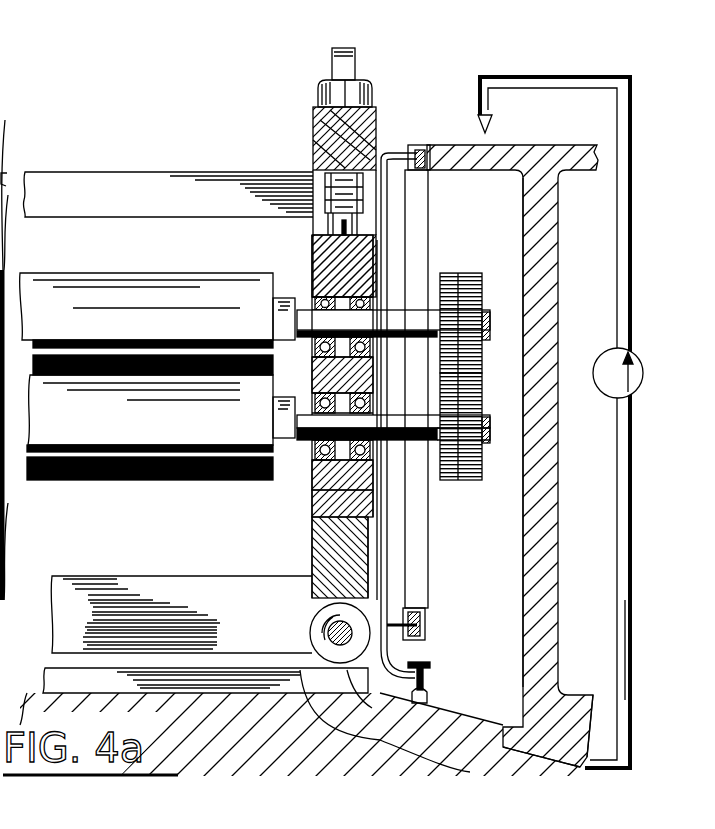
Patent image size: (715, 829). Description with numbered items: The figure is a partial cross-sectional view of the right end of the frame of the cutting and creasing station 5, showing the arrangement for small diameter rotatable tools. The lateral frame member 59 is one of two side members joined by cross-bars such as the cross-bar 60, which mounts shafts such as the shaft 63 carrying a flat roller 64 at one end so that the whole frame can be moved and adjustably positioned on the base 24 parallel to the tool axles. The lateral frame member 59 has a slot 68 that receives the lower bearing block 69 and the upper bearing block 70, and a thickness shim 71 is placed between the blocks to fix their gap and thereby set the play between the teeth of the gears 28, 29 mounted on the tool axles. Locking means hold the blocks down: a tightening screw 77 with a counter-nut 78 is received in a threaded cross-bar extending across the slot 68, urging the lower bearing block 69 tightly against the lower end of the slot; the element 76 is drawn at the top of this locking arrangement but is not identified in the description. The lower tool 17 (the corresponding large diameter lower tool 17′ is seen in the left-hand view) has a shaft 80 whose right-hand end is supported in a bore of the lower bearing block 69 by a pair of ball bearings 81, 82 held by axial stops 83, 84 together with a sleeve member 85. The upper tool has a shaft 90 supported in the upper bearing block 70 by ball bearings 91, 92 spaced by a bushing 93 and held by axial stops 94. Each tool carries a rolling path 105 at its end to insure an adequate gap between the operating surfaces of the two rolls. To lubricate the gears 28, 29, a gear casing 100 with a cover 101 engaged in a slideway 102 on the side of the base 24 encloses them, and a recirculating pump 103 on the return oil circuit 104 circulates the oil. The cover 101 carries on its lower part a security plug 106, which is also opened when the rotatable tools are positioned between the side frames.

The cutting and creasing station 5 is at (552, 64).
The lower tool 17 is at (137, 433).
The large diameter lower tool 17′ is at (5, 500).
The base 24 is at (3, 623).
The gear 28 is at (483, 457).
The gear 29 is at (483, 293).
The lateral frame member 59 is at (372, 562).
The cross-bar 60 is at (3, 597).
The shaft 63 is at (470, 770).
The flat roller 64 is at (583, 736).
The slot 68 is at (378, 515).
The lower bearing block 69 is at (385, 505).
The upper bearing block 70 is at (372, 243).
The thickness shim 71 is at (483, 400).
The cylinder 76 is at (313, 117).
The tightening screw 77 is at (313, 165).
The counter-nut 78 is at (318, 92).
The shaft 80 is at (300, 432).
The ball bearing 81 is at (312, 492).
The ball bearing 82 is at (358, 560).
The axial stop 83 is at (390, 492).
The axial stop 84 is at (318, 450).
The sleeve member 85 is at (312, 507).
The shaft 90 is at (163, 357).
The ball bearing 91 is at (313, 290).
The ball bearing 92 is at (335, 300).
The bushing 93 is at (440, 290).
The axial stop 94 is at (412, 305).
The gear casing 100 is at (500, 215).
The cover 101 is at (597, 703).
The slideway 102 is at (425, 605).
The recirculating pump 103 is at (640, 352).
The return oil circuit 104 is at (627, 618).
The rolling path 105 is at (53, 303).
The security plug 106 is at (432, 664).